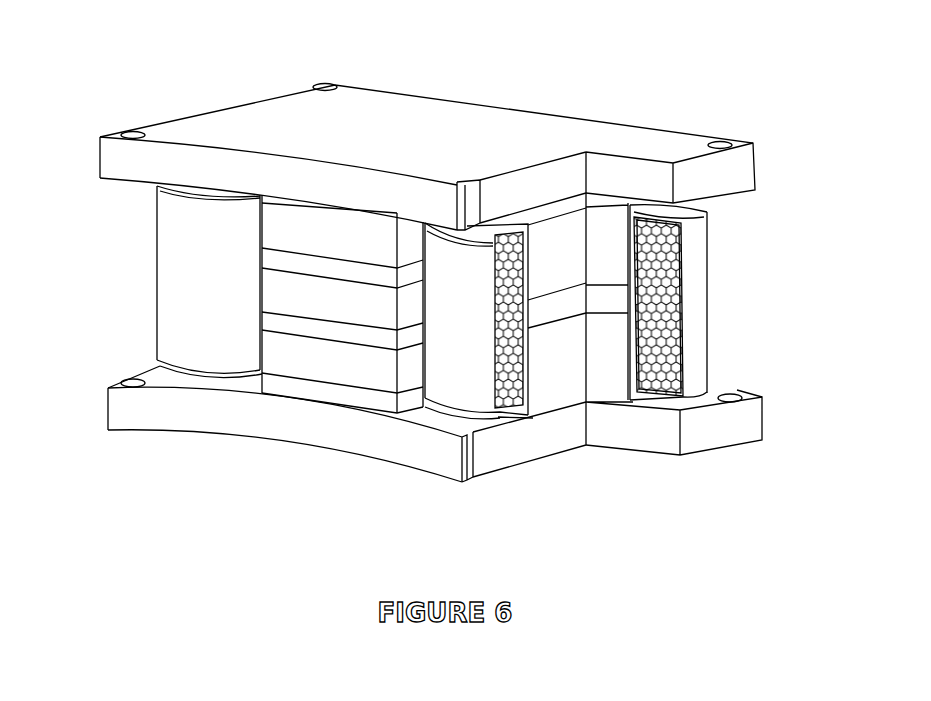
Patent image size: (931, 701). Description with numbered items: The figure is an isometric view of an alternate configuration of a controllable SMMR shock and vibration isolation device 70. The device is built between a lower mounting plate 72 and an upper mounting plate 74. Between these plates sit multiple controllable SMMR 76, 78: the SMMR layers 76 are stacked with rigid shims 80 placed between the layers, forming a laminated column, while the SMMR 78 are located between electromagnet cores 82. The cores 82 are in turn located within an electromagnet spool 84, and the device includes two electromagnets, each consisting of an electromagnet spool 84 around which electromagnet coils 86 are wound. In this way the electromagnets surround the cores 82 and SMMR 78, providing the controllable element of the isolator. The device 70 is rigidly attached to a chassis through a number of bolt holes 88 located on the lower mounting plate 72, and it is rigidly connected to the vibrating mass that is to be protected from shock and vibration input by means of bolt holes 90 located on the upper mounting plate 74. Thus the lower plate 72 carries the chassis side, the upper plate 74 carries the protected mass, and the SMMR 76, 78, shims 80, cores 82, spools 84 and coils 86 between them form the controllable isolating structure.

The controllable SMMR shock and vibration isolation device 70 is at (617, 72).
The lower mounting plate 72 is at (733, 418).
The upper mounting plate 74 is at (457, 130).
The controllable SMMR layers 76 is at (382, 372).
The controllable SMMR 78 is at (603, 307).
The rigid shims 80 is at (325, 387).
The electromagnet cores 82 is at (608, 260).
The electromagnet spools 84 is at (182, 195).
The electromagnet coils 86 is at (180, 265).
The bolt holes 88 is at (132, 383).
The bolt holes 90 is at (307, 85).